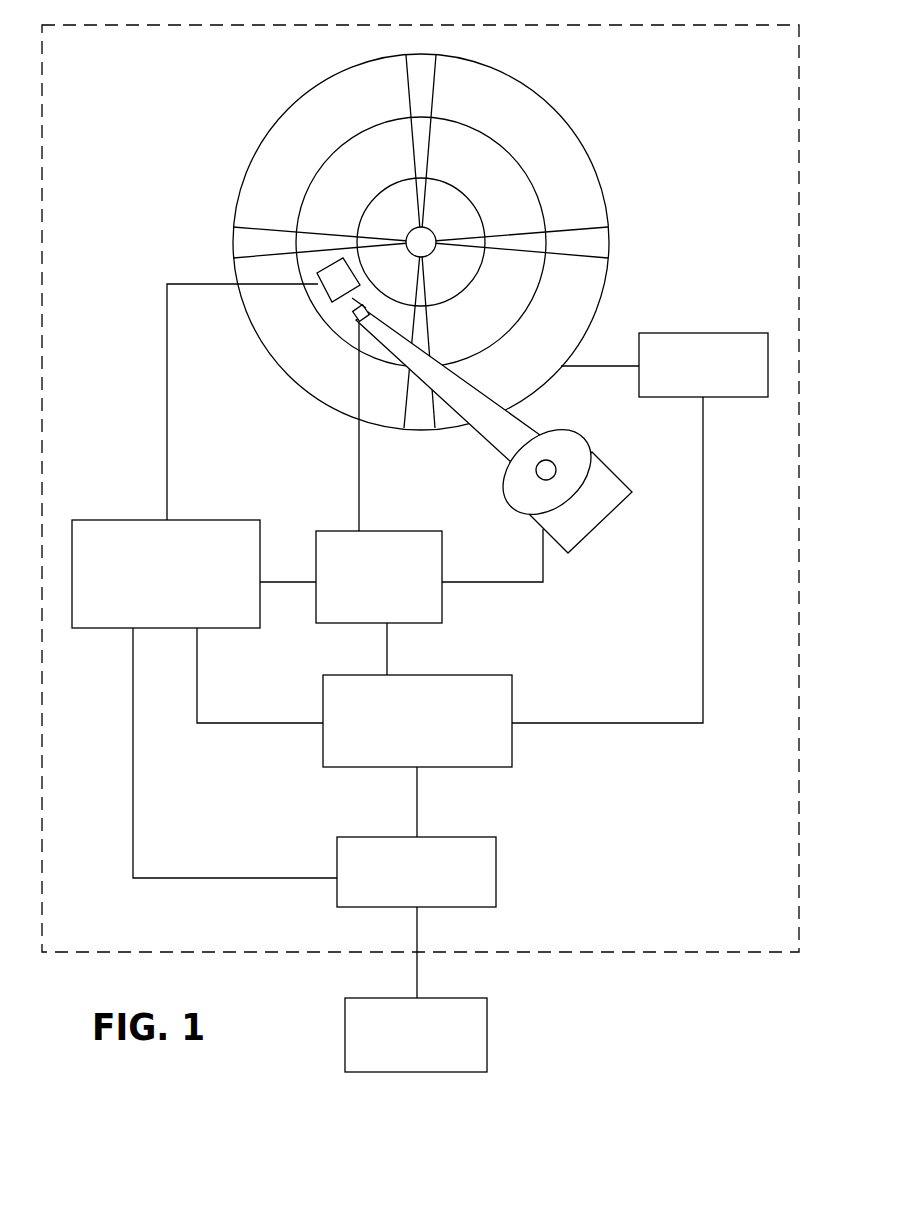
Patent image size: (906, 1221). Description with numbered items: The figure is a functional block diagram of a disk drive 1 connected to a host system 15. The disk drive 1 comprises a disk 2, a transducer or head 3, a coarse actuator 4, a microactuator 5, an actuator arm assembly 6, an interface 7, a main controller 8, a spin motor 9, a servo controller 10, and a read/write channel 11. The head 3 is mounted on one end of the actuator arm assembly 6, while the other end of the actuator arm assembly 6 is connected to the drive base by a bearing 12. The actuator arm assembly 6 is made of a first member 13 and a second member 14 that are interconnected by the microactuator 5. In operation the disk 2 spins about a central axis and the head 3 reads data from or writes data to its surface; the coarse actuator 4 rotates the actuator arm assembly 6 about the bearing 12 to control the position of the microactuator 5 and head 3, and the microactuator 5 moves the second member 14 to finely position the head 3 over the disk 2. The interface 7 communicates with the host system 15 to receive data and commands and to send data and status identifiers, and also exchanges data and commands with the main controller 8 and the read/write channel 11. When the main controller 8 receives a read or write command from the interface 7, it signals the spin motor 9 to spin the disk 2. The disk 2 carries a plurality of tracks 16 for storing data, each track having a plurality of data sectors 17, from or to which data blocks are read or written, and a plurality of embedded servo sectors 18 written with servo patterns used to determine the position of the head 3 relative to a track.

The disk drive 1 is at (700, 953).
The disk 2 is at (310, 91).
The head 3 is at (327, 293).
The coarse actuator 4 is at (617, 503).
The microactuator 5 is at (357, 317).
The actuator arm assembly 6 is at (442, 346).
The interface 7 is at (496, 872).
The main controller 8 is at (463, 767).
The spin motor 9 is at (687, 333).
The servo controller 10 is at (442, 600).
The read/write channel 11 is at (228, 520).
The bearing 12 is at (550, 460).
The first member 13 is at (475, 433).
The second member 14 is at (360, 300).
The host system 15 is at (487, 1028).
The tracks 16 is at (357, 178).
The data sectors 17 is at (498, 103).
The embedded servo sectors 18 is at (592, 243).